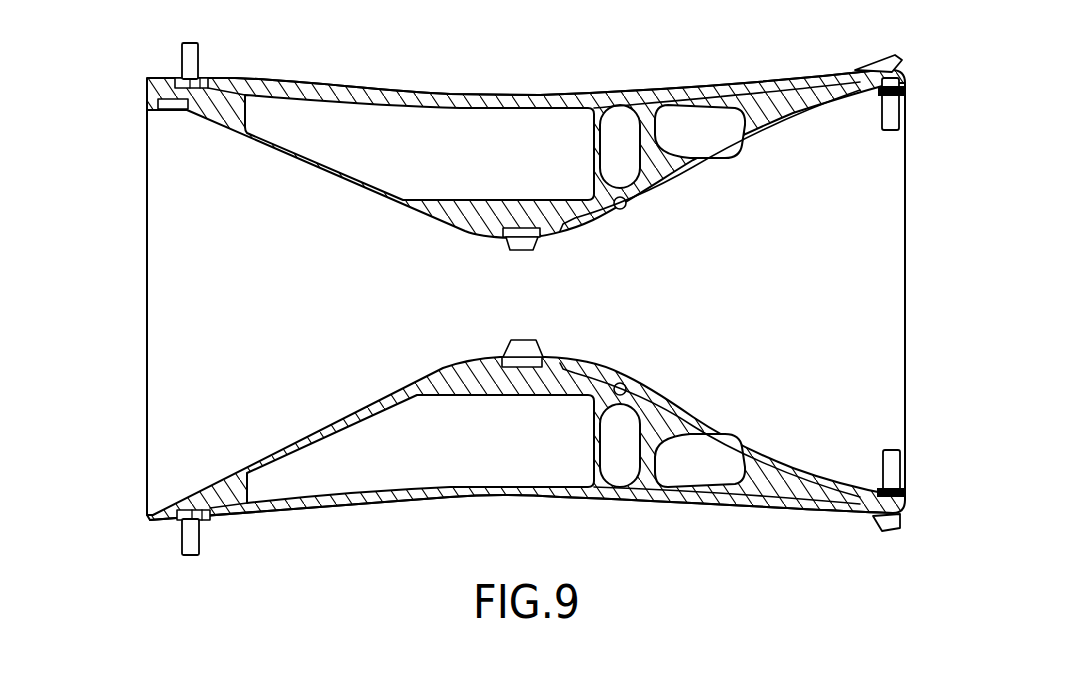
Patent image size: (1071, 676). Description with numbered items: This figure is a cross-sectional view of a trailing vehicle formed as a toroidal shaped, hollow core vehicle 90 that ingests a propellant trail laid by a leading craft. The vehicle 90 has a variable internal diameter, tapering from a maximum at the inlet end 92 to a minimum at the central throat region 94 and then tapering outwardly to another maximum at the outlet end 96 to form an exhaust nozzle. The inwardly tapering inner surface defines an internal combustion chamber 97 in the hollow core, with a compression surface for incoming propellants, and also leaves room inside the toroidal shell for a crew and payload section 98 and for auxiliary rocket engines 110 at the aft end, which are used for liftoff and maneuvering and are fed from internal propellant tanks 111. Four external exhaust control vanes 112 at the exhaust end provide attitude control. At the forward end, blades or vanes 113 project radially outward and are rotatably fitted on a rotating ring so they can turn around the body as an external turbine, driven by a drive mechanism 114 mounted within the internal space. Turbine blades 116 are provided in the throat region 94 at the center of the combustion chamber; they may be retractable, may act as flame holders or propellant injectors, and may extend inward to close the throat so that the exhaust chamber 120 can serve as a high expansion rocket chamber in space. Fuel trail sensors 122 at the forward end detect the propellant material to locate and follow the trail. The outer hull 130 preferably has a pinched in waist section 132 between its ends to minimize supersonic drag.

The hollow core vehicle 90 is at (434, 74).
The inlet end 92 is at (165, 245).
The throat region 94 is at (550, 234).
The outlet end 96 is at (877, 383).
The internal combustion chamber 97 is at (599, 310).
The crew and payload section 98 is at (434, 158).
The auxiliary rocket engines 110 is at (883, 57).
The internal propellant tanks 111 is at (680, 113).
The external exhaust control vanes 112 is at (897, 124).
The blades or vanes 113 is at (192, 52).
The drive mechanism 114 is at (503, 234).
The turbine blades 116 is at (520, 345).
The exhaust chamber 120 is at (868, 272).
The fuel trail sensors 122 is at (153, 107).
The outer hull 130 is at (278, 82).
The waist section 132 is at (487, 93).